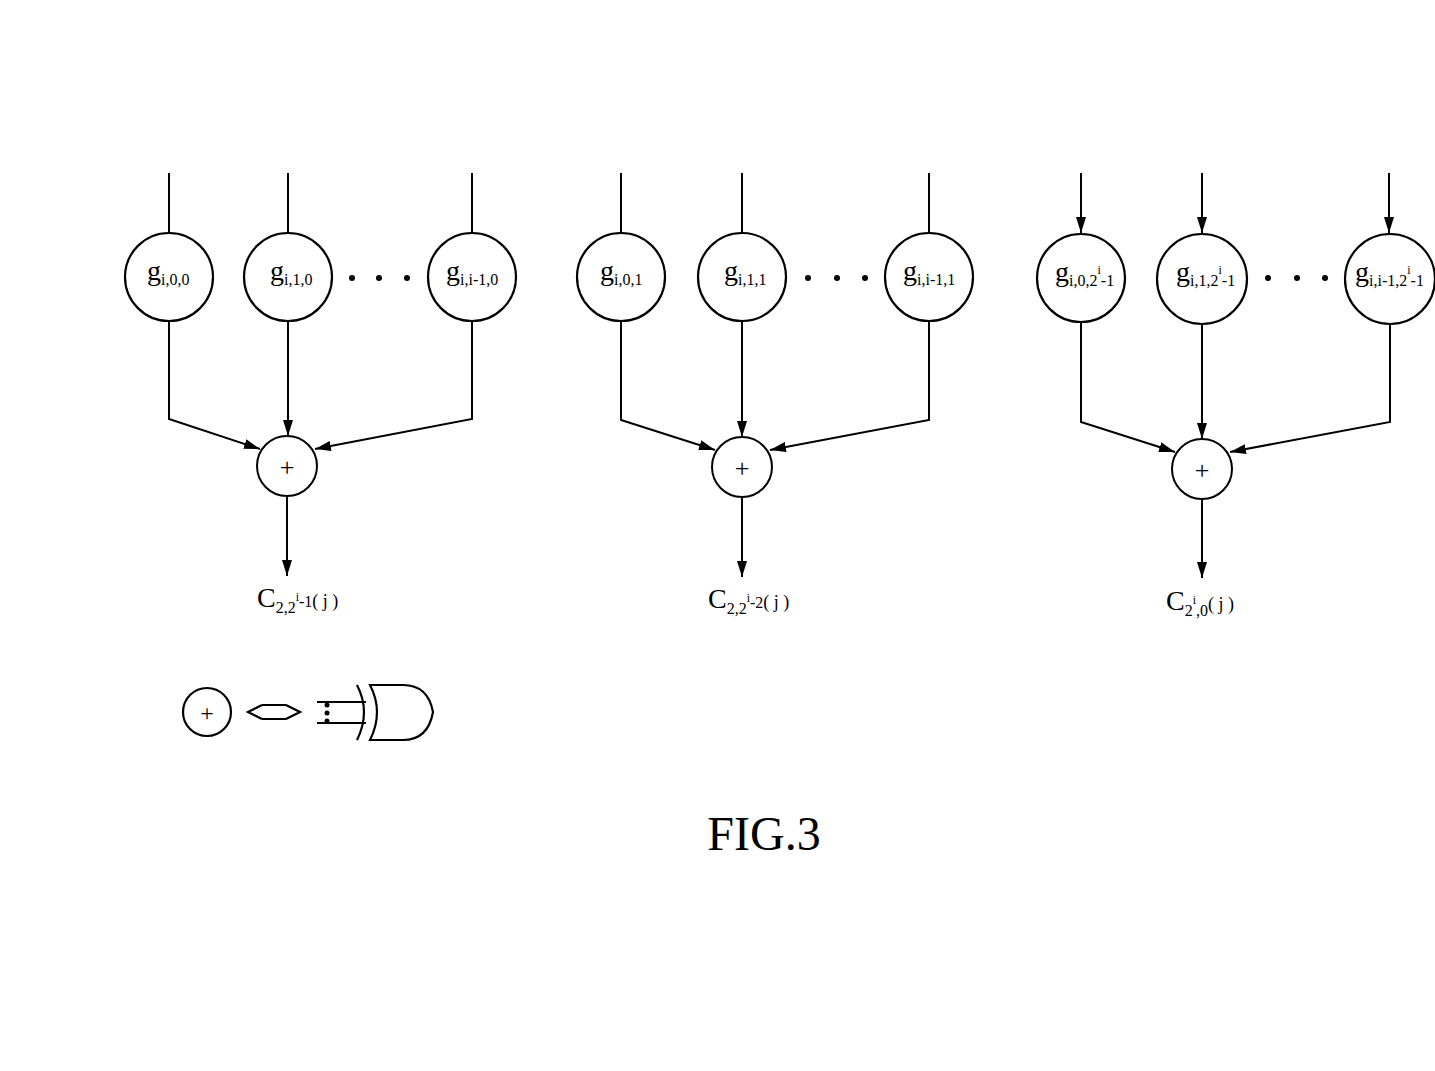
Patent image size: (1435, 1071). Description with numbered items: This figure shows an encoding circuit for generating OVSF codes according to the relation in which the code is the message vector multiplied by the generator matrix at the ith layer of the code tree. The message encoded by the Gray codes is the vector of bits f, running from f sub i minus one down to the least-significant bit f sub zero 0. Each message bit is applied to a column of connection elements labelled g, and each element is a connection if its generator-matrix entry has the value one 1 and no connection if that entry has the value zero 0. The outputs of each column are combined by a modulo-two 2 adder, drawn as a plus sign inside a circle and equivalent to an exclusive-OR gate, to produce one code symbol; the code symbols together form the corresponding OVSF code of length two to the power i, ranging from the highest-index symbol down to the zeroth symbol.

The input signal f0 0 is at (929, 180).
The input signal f(i-1) 1 is at (631, 180).
The input signal f(i-2) 2 is at (749, 180).